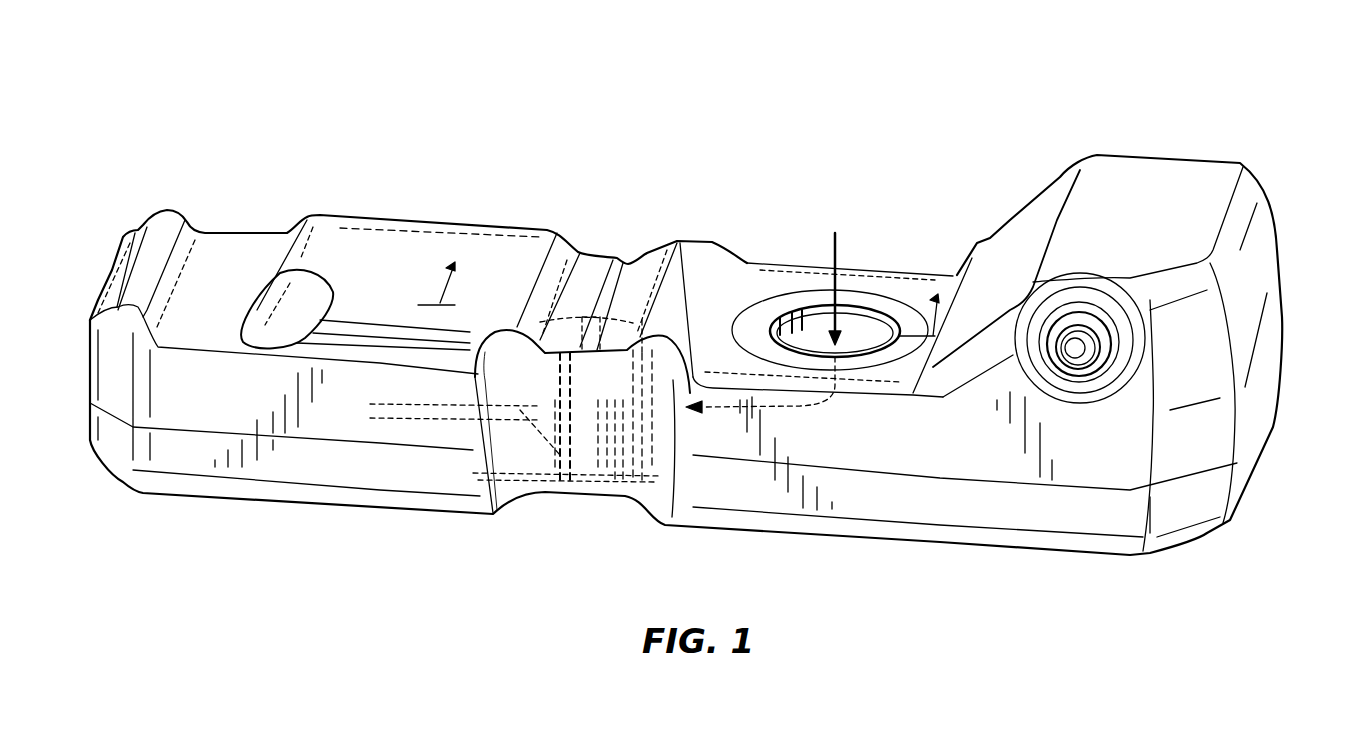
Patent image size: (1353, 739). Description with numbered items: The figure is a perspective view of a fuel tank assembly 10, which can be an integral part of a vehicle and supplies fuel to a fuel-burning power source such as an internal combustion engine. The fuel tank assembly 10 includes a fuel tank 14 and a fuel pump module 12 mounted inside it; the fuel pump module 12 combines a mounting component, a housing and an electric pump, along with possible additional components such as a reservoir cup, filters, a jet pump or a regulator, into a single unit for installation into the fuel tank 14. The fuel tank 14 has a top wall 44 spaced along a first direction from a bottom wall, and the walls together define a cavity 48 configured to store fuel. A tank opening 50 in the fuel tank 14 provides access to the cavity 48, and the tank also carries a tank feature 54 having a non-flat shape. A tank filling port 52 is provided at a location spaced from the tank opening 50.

The fuel tank assembly 10 is at (194, 138).
The fuel pump module 12 is at (575, 493).
The fuel tank 14 is at (1268, 263).
The top wall 44 is at (381, 253).
The cavity 48 is at (860, 343).
The tank opening 50 is at (810, 320).
The tank filling port 52 is at (1100, 357).
The tank feature 54 is at (634, 226).